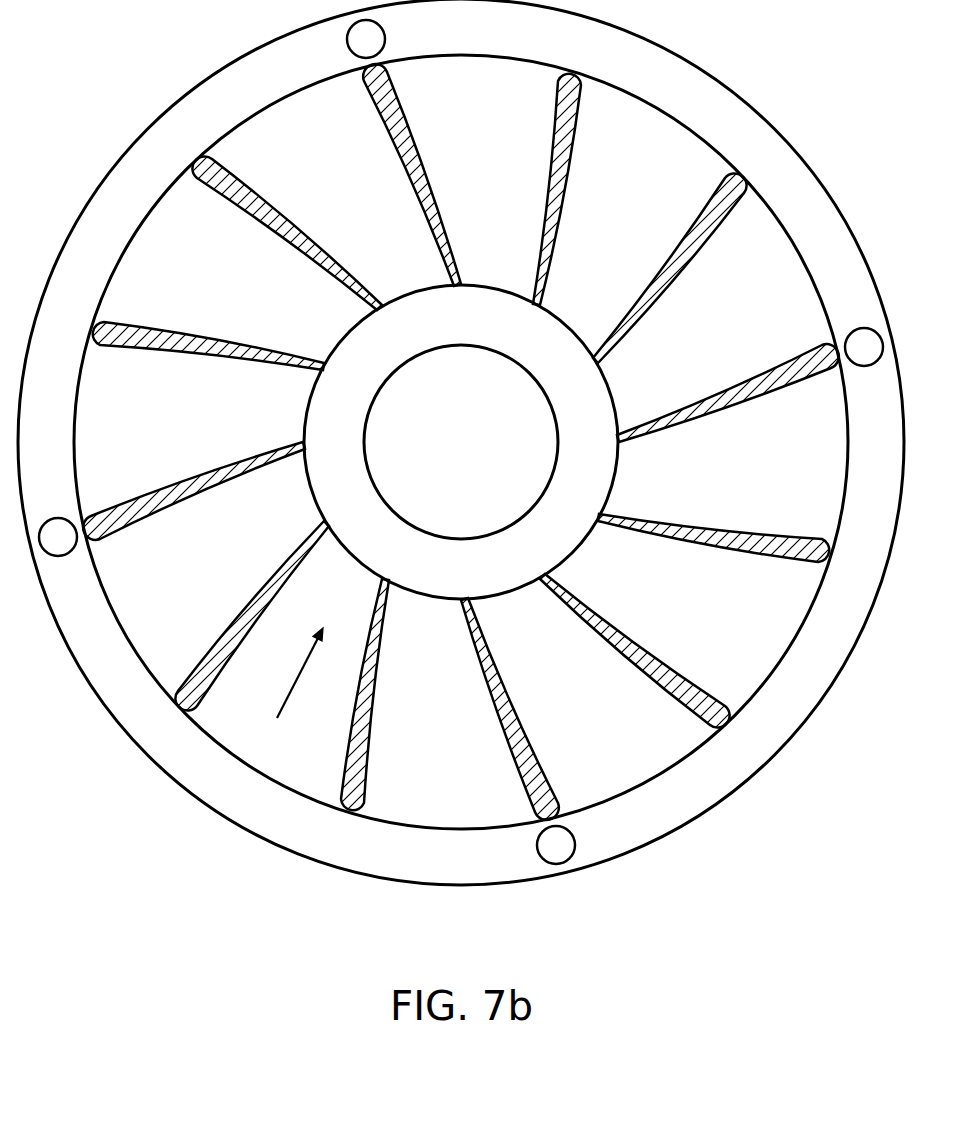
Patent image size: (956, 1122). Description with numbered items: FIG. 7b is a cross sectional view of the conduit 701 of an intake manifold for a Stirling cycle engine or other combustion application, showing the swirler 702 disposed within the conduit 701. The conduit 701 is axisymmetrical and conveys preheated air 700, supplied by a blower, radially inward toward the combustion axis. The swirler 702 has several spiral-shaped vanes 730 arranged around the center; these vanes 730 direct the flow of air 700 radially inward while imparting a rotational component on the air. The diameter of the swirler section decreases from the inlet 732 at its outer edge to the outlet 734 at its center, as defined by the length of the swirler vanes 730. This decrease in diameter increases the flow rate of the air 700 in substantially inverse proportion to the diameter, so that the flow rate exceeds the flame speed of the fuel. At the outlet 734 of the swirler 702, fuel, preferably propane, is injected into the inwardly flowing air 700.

The air 700 is at (302, 673).
The conduit 701 is at (195, 860).
The swirler 702 is at (461, 442).
The swirler vane 730 is at (697, 247).
The inlet 732 is at (660, 800).
The outlet 734 is at (400, 491).